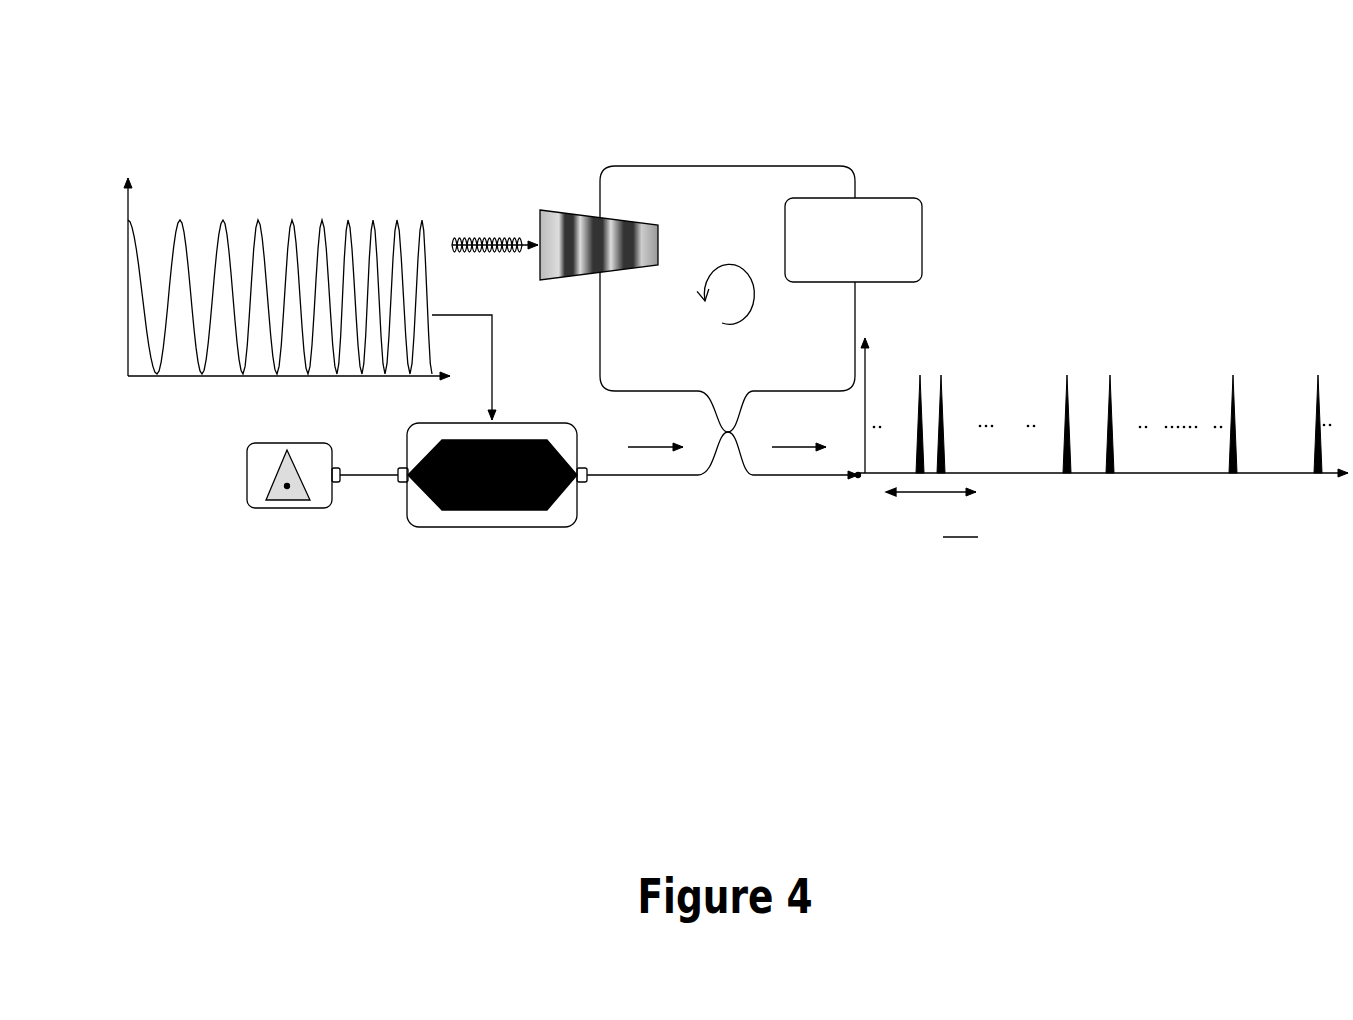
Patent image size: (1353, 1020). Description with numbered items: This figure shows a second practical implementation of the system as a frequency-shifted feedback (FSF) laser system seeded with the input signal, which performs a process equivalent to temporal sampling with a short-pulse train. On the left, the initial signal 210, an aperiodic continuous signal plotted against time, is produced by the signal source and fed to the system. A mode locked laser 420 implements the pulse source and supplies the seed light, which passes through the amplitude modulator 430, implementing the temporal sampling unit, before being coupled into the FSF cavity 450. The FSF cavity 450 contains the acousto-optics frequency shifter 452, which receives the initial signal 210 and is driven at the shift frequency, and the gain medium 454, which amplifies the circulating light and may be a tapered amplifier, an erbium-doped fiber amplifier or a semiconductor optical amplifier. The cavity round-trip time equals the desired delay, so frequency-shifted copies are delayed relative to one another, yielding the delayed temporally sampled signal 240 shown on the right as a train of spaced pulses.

The initial signal 210 is at (290, 86).
The delayed temporally sampled signal 240 is at (1128, 193).
The mode locked laser 420 is at (277, 568).
The amplitude modulator 430 is at (488, 563).
The FSF cavity 450 is at (723, 85).
The acousto-optics frequency shifter (AOFS) 452 is at (583, 151).
The gain medium 454 is at (920, 191).